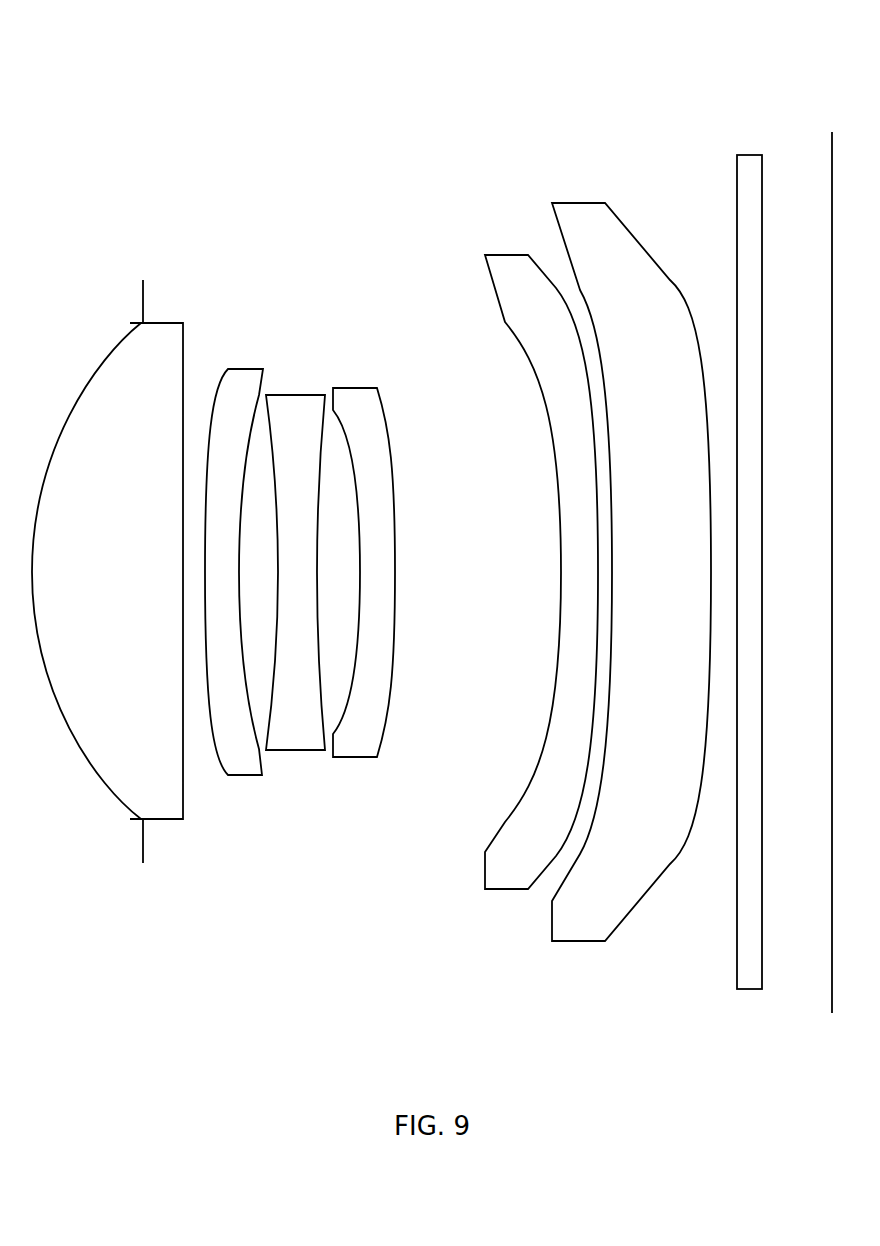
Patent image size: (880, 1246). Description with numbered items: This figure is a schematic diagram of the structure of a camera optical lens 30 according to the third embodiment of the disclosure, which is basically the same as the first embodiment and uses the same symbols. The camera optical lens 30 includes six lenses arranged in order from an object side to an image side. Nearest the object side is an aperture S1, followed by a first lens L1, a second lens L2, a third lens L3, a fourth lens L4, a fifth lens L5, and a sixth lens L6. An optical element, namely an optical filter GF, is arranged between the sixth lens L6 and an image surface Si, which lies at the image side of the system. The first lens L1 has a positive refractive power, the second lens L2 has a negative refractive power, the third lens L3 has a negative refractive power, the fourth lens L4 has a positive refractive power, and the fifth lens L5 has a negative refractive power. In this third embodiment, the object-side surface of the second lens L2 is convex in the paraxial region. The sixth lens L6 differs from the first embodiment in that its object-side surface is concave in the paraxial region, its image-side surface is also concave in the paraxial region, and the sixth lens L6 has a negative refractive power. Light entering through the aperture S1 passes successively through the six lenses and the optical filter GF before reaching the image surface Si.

The camera optical lens 30 is at (423, 52).
The aperture S1 is at (156, 559).
The first lens L1 is at (107, 555).
The second lens L2 is at (234, 558).
The third lens L3 is at (295, 559).
The fourth lens L4 is at (364, 559).
The fifth lens L5 is at (541, 559).
The sixth lens L6 is at (631, 558).
The optical filter GF is at (749, 557).
The image surface Si is at (832, 558).